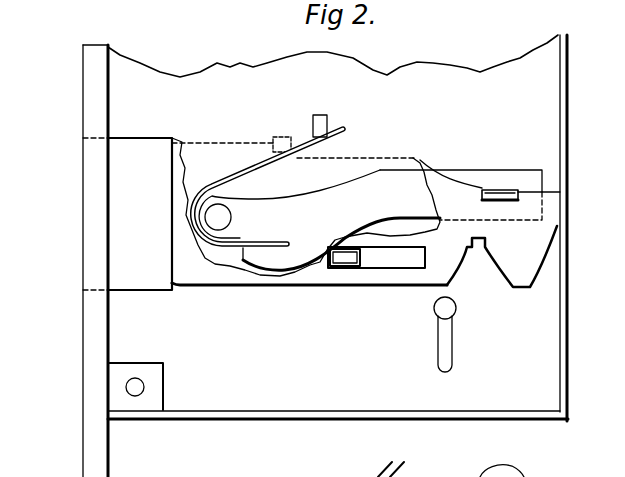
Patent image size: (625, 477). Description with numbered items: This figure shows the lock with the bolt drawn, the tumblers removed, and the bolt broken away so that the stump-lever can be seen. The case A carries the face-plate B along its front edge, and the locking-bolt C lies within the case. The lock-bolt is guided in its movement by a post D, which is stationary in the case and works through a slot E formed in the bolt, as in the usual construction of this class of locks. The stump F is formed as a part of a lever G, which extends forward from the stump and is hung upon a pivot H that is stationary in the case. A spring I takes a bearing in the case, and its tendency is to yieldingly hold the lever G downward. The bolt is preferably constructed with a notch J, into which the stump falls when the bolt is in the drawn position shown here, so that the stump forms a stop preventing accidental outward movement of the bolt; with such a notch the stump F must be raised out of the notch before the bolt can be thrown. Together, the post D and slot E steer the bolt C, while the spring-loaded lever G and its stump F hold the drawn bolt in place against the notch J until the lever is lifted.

The case A is at (338, 228).
The face-plate B is at (309, 256).
The locking-bolt C is at (140, 214).
The post D is at (345, 258).
The slot E is at (376, 257).
The stump F is at (499, 190).
The lever G is at (366, 202).
The pivot H is at (231, 217).
The spring I is at (343, 129).
The notch J is at (500, 205).